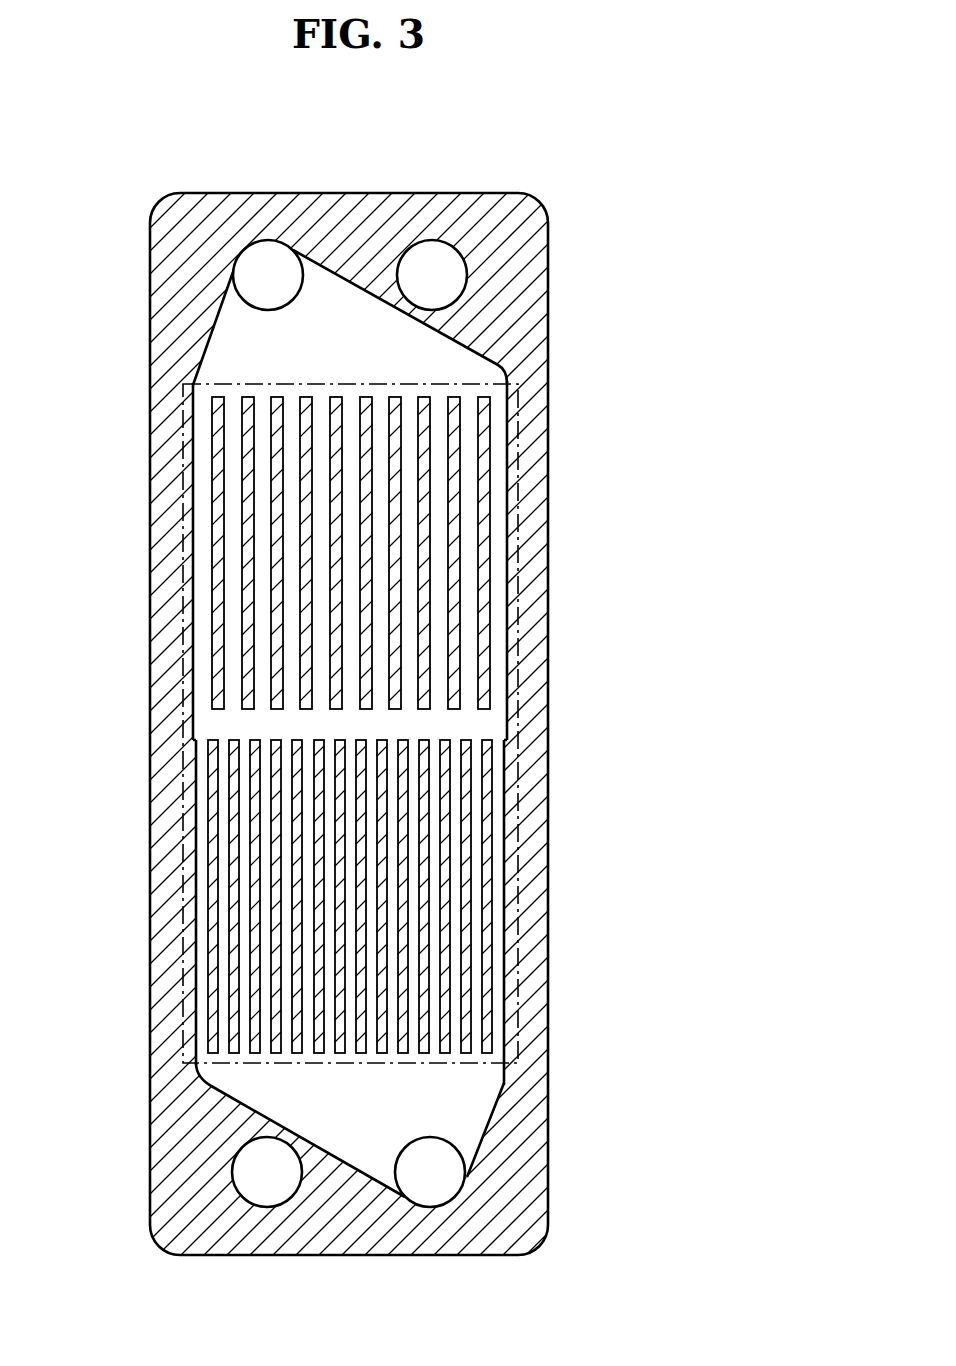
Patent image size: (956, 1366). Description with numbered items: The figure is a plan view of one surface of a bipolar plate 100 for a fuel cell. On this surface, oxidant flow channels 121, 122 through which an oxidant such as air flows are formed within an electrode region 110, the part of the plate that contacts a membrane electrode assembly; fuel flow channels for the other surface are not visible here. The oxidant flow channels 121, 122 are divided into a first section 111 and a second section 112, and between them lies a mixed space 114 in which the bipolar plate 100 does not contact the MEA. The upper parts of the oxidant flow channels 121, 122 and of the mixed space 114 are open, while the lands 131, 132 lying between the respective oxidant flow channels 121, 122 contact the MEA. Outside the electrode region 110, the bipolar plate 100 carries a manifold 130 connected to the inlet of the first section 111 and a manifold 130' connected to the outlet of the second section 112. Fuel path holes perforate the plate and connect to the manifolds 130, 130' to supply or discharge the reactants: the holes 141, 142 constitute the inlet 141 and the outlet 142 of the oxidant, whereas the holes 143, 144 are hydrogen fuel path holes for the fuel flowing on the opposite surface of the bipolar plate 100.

The bipolar plate 100 is at (549, 310).
The electrode region 110 is at (517, 647).
The first section 111 is at (121, 397).
The second section 112 is at (121, 740).
The mixed space 114 is at (121, 707).
The oxidant flow channel 121 is at (425, 553).
The oxidant flow channel 122 is at (422, 896).
The land 131 is at (480, 557).
The land 132 is at (482, 825).
The manifold 130 is at (292, 317).
The manifold 130' is at (417, 1130).
The fuel path hole (oxidant inlet) 141 is at (270, 240).
The fuel path hole (oxidant outlet) 142 is at (432, 1207).
The hydrogen fuel path hole 143 is at (270, 1207).
The hydrogen fuel path hole 144 is at (431, 240).